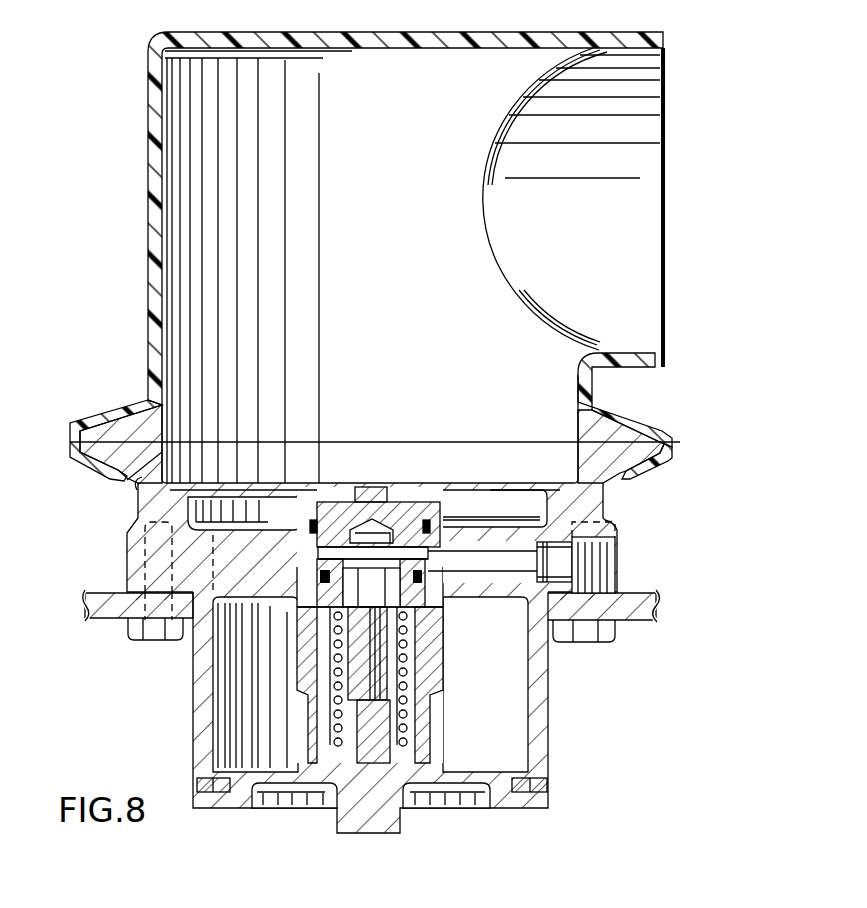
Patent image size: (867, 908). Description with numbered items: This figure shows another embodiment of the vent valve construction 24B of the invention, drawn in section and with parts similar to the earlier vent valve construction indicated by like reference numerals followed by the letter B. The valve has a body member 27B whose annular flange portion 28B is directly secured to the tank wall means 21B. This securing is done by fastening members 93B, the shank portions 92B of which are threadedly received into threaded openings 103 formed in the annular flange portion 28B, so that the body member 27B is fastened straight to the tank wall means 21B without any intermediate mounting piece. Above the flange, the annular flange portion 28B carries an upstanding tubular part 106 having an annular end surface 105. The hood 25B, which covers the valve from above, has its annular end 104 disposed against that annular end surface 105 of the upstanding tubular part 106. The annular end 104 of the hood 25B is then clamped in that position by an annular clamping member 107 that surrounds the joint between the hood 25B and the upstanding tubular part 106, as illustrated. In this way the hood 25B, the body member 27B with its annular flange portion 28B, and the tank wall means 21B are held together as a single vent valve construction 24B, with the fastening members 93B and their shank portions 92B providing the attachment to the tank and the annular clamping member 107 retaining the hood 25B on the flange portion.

The hood 25B is at (458, 32).
The annular end surface 105 is at (132, 438).
The annular end 104 is at (110, 433).
The upstanding tubular part 106 is at (142, 478).
The annular clamping member 107 is at (673, 448).
The threaded openings 103 is at (120, 532).
The annular flange portion 28B is at (127, 558).
The shank portions 92B is at (150, 572).
The fastening members 93B is at (128, 634).
The tank wall means 21B is at (660, 607).
The vent valve construction 24B is at (602, 686).
The body member 27B is at (548, 752).